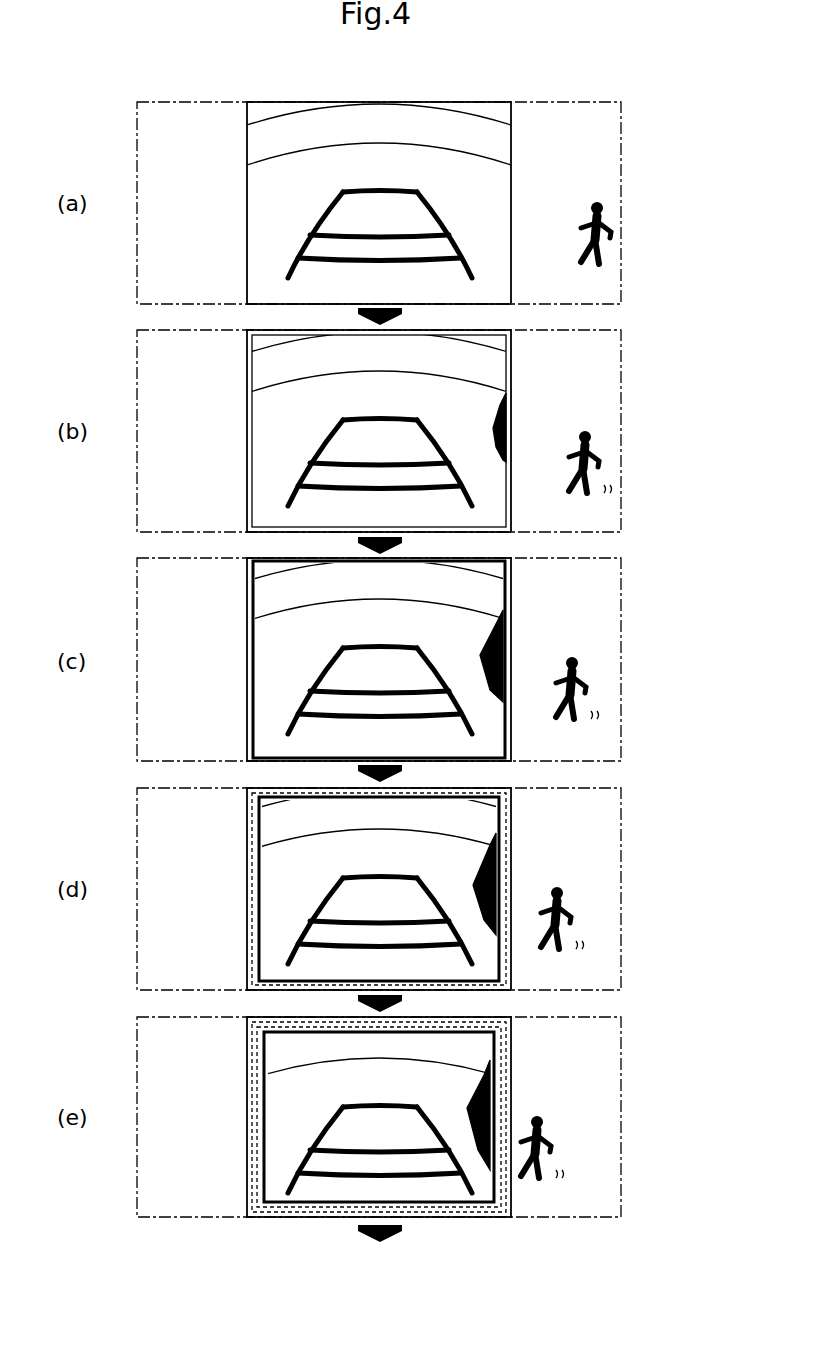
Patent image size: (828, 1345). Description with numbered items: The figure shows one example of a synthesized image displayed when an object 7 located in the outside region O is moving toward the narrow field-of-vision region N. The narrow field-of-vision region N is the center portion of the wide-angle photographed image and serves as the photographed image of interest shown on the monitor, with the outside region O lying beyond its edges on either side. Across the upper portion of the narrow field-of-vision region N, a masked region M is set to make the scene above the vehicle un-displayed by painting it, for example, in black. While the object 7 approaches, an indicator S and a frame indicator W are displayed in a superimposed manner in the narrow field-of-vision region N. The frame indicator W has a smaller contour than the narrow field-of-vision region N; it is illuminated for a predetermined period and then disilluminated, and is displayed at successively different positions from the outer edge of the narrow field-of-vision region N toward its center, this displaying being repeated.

The outside region O is at (181, 124).
The masked region M is at (488, 110).
The narrow field-of-vision region N is at (276, 228).
The object 7 is at (586, 252).
The frame indicator W is at (247, 460).
The indicator S is at (502, 416).